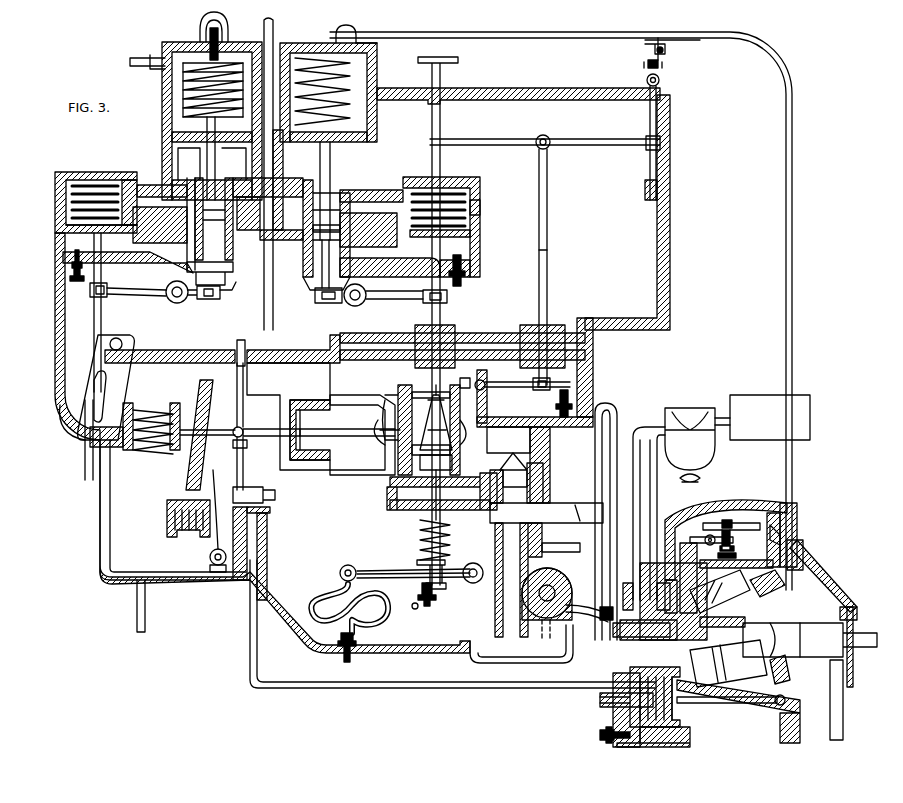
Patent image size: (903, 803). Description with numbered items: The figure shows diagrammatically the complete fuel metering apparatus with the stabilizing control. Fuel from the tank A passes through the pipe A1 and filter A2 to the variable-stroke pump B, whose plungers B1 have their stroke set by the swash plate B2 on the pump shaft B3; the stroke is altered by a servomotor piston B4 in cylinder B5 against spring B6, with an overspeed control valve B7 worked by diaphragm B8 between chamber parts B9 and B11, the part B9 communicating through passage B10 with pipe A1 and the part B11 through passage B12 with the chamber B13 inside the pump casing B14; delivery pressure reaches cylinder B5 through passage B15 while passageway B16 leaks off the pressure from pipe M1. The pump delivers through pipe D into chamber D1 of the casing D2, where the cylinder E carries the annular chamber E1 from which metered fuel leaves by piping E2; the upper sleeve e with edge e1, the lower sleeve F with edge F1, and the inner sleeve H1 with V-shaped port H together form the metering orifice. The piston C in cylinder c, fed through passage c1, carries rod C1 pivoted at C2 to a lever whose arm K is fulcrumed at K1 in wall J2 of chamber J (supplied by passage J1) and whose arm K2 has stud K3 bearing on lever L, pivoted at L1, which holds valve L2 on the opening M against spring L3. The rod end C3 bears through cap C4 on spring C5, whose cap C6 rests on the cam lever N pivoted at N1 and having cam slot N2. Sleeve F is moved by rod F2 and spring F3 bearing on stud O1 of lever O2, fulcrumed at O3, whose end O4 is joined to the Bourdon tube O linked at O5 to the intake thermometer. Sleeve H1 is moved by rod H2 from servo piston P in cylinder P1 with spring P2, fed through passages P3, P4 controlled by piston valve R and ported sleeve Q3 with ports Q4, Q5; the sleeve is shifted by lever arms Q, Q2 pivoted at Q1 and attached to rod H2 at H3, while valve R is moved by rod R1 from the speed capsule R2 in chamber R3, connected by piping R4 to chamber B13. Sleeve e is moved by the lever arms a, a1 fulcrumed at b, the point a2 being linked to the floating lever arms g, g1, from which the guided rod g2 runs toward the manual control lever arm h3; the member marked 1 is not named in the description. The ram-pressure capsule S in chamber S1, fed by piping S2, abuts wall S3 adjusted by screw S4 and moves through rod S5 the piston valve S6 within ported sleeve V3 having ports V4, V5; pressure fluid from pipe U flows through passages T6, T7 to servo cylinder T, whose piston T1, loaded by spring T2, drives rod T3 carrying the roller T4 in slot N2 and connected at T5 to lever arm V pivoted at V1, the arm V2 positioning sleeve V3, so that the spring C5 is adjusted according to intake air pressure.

The servo motor cylinder T is at (62, 196).
The servo piston T1 is at (66, 236).
The spring T2 is at (95, 186).
The piston rod T3 is at (92, 322).
The pin or roller T4 is at (84, 395).
The connection point T5 is at (90, 290).
The passage T6 is at (150, 262).
The passage T7 is at (126, 186).
The exhausted pressure sensitive capsule S is at (213, 90).
The chamber S1 is at (172, 52).
The piping S2 is at (130, 62).
The casing wall S3 is at (204, 44).
The adjusting screw S4 is at (222, 40).
The rod S5 is at (207, 156).
The piston valve S6 is at (226, 182).
The pressure fluid pipe U is at (273, 25).
The piston valve R is at (332, 200).
The rod R1 is at (338, 110).
The pressure sensitive capsule R2 is at (340, 45).
The chamber R3 is at (358, 52).
The piping R4 is at (535, 35).
The floating lever arm g is at (485, 140).
The floating lever arm g1 is at (580, 140).
The guided rod g2 is at (660, 84).
The control lever arm h3 is at (692, 48).
The rod 1 is at (548, 252).
The lever arm V is at (128, 296).
The eccentric bearing pivot V1 is at (178, 306).
The lever arm V2 is at (212, 304).
The ported sliding sleeve V3 is at (228, 280).
The port V4 is at (212, 282).
The port V5 is at (168, 190).
The lever arm Q is at (374, 302).
The eccentric bearing pivot Q1 is at (342, 302).
The lever arm Q2 is at (316, 297).
The ported sleeve Q3 is at (310, 258).
The port Q4 is at (305, 268).
The port Q5 is at (345, 200).
The servomotor piston P is at (472, 262).
The servomotor cylinder P1 is at (480, 210).
The spring P2 is at (460, 186).
The passage P3 is at (380, 210).
The passage P4 is at (400, 180).
The V-shaped port H is at (436, 422).
The inner sliding sleeve H1 is at (470, 424).
The rod H2 is at (442, 318).
The connection point H3 is at (448, 296).
The cam lever member N is at (82, 368).
The pivot N1 is at (110, 345).
The cam slot N2 is at (68, 410).
The lever arm K is at (237, 398).
The fulcrum K1 is at (244, 348).
The lever arm K2 is at (246, 450).
The adjustable stud K3 is at (263, 495).
The closed chamber J is at (268, 392).
The passage J1 is at (510, 680).
The chamber wall J2 is at (262, 362).
The piston C is at (316, 406).
The piston rod C1 is at (244, 430).
The pivot connection C2 is at (232, 440).
The outer end of piston rod C3 is at (160, 408).
The cap C4 is at (196, 424).
The coiled spring C5 is at (180, 408).
The cap C6 is at (135, 400).
The cylinder c is at (312, 402).
The passage c1 is at (295, 460).
The fuel delivery pipe D is at (610, 412).
The chamber D1 is at (376, 387).
The closed casting D2 is at (594, 376).
The cylinder E is at (385, 420).
The annular chamber E1 is at (372, 440).
The piping E2 is at (552, 490).
The sliding sleeve e is at (400, 400).
The sleeve edge e1 is at (436, 400).
The lever arm a is at (506, 383).
The lever arm a1 is at (465, 380).
The connection point a2 is at (545, 390).
The fulcrum b is at (479, 381).
The sliding sleeve F is at (412, 455).
The sleeve edge F1 is at (440, 470).
The rod F2 is at (420, 522).
The spring F3 is at (422, 536).
The lever L is at (213, 520).
The pivot L1 is at (216, 568).
The valve L2 is at (220, 492).
The spring L3 is at (167, 522).
The opening M is at (270, 518).
The pipe M1 is at (394, 692).
The Bourdon tube O is at (318, 585).
The adjustable stud O1 is at (418, 606).
The lever O2 is at (397, 570).
The fulcrum O3 is at (473, 584).
The free end of lever O4 is at (349, 565).
The connection O5 is at (345, 656).
The fuel tank A is at (752, 408).
The fuel supply pipe A1 is at (640, 420).
The filter A2 is at (705, 455).
The fuel pump B is at (745, 688).
The plungers B1 is at (790, 690).
The swash plate B2 is at (843, 700).
The pump shaft B3 is at (860, 630).
The servomotor piston B4 is at (668, 744).
The servomotor cylinder B5 is at (640, 747).
The spring B6 is at (614, 724).
The overspeed control valve B7 is at (702, 535).
The diaphragm B8 is at (797, 510).
The chamber part B9 is at (775, 533).
The passage B10 is at (690, 526).
The chamber part B11 is at (730, 523).
The passage B12 is at (800, 552).
The pump chamber B13 is at (822, 572).
The pump casing B14 is at (850, 600).
The passage B15 is at (703, 667).
The passageway B16 is at (697, 580).